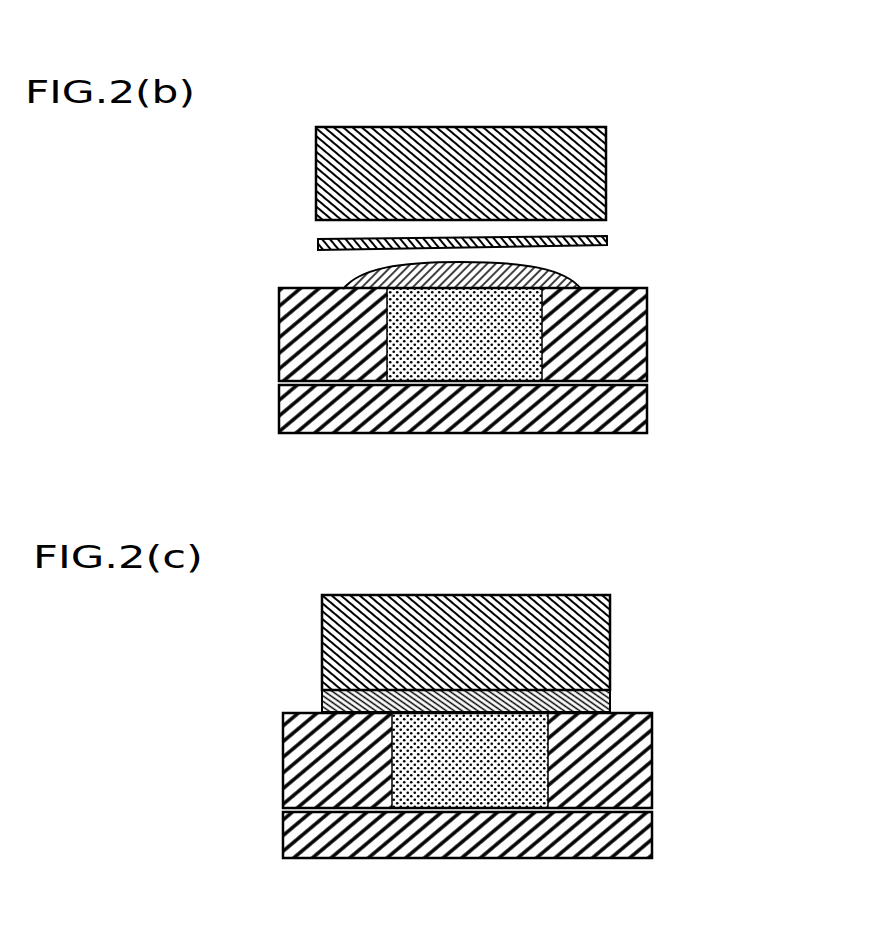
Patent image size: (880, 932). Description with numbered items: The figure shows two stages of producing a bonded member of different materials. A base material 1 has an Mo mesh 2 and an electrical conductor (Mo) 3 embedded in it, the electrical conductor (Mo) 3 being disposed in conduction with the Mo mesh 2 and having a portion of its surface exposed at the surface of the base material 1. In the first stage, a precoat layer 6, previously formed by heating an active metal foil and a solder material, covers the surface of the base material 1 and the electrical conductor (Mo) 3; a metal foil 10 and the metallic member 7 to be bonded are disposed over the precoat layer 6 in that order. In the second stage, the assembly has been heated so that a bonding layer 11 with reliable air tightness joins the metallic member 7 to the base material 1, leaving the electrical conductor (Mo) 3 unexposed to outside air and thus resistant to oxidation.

In FIG. 2B, the base material 1 is at (628, 313).
In FIG. 2C, the base material 1 is at (633, 737).
In FIG. 2B, the Mo mesh 2 is at (279, 384).
In FIG. 2C, the Mo mesh 2 is at (283, 810).
In FIG. 2B, the electrical conductor (Mo) 3 is at (430, 297).
In FIG. 2C, the electrical conductor (Mo) 3 is at (418, 755).
In FIG. 2B, the precoat layer 6 is at (581, 288).
In FIG. 2B, the metallic member 7 is at (580, 150).
In FIG. 2C, the metallic member 7 is at (588, 620).
In FIG. 2B, the metal foil 10 is at (607, 237).
In FIG. 2C, the bonding layer 11 is at (603, 699).